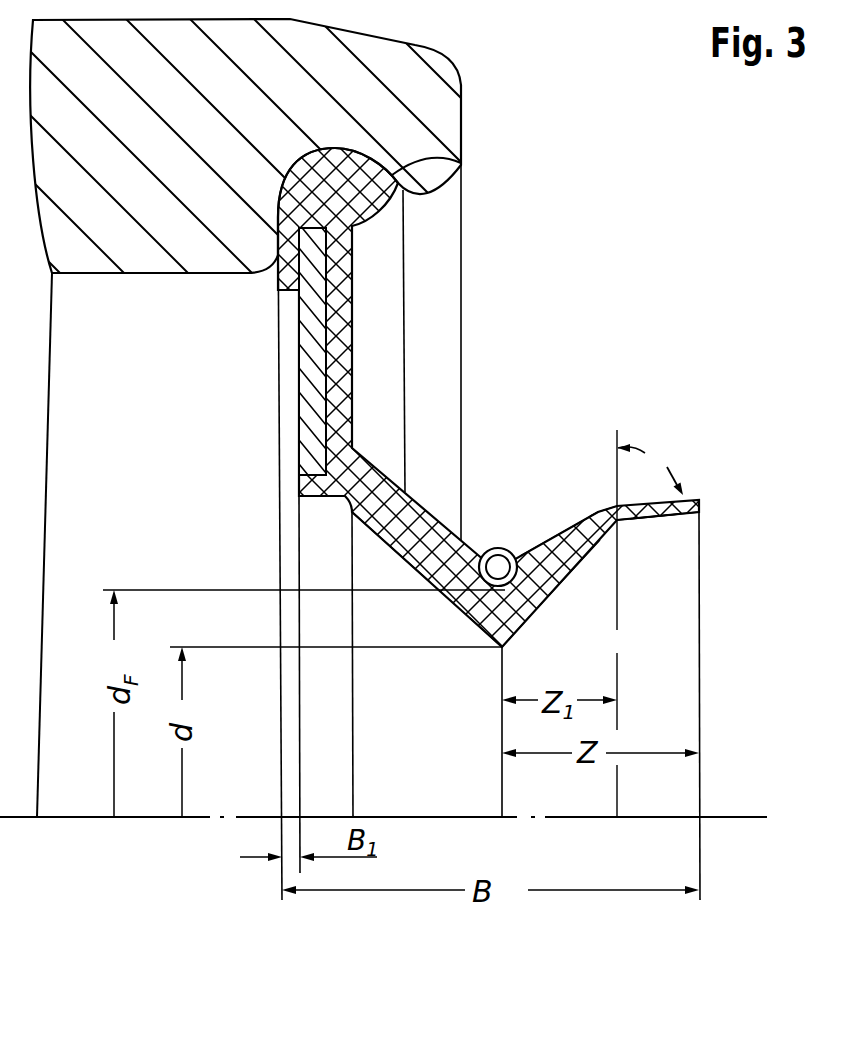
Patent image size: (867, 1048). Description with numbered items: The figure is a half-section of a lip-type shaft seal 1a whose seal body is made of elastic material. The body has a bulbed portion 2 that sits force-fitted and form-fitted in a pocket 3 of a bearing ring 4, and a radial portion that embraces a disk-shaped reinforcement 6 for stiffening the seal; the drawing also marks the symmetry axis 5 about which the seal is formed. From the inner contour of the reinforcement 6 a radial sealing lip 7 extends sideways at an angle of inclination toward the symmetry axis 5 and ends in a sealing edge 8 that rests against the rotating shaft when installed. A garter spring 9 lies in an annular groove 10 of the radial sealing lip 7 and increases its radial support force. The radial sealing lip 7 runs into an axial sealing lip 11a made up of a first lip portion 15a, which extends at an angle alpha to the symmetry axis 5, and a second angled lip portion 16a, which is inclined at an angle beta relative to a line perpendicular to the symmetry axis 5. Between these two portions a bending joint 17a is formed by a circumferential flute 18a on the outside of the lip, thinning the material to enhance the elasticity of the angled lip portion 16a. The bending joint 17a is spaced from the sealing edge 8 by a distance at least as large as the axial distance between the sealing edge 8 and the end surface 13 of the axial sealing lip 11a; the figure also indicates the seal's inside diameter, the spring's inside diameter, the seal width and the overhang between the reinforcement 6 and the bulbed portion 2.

The shaft seal 1a is at (545, 362).
The bulbed portion 2 is at (403, 205).
The pocket 3 is at (457, 163).
The bearing ring 4 is at (443, 118).
The symmetry axis 5 is at (750, 817).
The reinforcement 6 is at (300, 388).
The radial sealing lip 7 is at (367, 540).
The sealing edge 8 is at (500, 650).
The garter spring 9 is at (528, 552).
The annular groove 10 is at (479, 566).
The axial sealing lip 11a is at (677, 538).
The end surface 13 is at (700, 505).
The first lip portion 15a is at (566, 580).
The second angled lip portion 16a is at (657, 523).
The bending joint 17a is at (591, 484).
The circumferential flute 18a is at (603, 512).